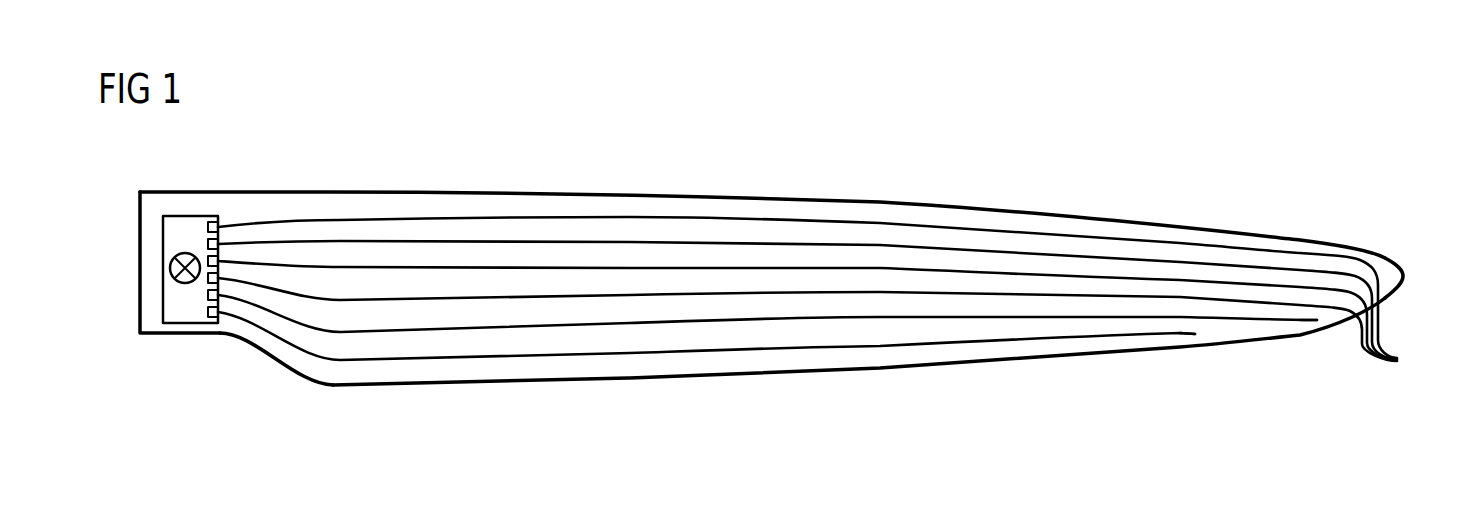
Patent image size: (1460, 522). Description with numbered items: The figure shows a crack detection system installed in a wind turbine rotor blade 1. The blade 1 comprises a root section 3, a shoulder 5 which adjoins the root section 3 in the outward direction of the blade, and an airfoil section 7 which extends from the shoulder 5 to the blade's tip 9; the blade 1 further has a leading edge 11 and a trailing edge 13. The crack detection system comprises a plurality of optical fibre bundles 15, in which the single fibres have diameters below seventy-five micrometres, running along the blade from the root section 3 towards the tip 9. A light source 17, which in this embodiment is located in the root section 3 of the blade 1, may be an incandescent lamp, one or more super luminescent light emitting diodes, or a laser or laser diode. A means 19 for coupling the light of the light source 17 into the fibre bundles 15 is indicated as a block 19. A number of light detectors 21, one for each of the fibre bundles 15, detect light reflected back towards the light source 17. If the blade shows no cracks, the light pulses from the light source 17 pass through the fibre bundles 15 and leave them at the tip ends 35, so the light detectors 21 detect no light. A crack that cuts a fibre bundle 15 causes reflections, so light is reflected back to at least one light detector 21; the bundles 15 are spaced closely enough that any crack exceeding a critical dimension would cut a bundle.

The wind turbine rotor blade 1 is at (919, 139).
The root section 3 is at (168, 357).
The shoulder 5 is at (323, 406).
The airfoil section 7 is at (715, 407).
The tip 9 is at (1393, 282).
The leading edge 11 is at (830, 199).
The trailing edge 13 is at (830, 376).
The optical fibre bundles 15 is at (570, 267).
The light source 17 is at (168, 265).
The means for coupling light 19 is at (163, 304).
The light detectors 21 is at (220, 227).
The tip ends 35 is at (1195, 334).